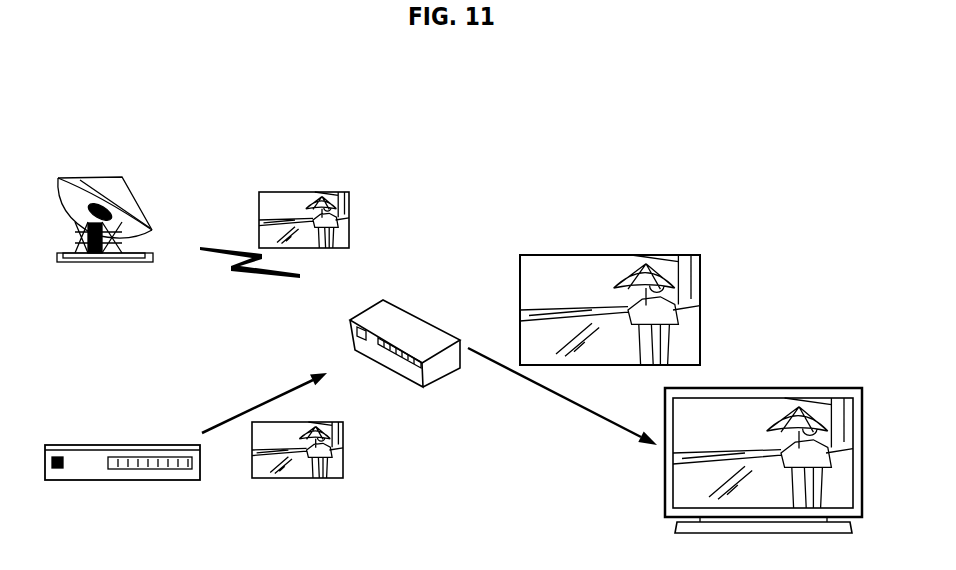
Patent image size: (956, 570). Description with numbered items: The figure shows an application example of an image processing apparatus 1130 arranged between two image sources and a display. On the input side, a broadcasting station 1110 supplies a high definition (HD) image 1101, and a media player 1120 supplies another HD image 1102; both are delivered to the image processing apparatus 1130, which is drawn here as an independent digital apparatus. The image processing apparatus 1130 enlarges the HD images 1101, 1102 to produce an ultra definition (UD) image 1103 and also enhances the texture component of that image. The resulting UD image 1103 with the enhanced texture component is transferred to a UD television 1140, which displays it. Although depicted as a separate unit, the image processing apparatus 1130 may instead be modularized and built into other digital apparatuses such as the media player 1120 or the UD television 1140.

The broadcasting station 1110 is at (80, 173).
The high definition (HD) image 1101 is at (315, 191).
The HD image 1102 is at (343, 453).
The ultra definition (UD) image 1103 is at (630, 255).
The image processing apparatus 1130 is at (410, 306).
The media player 1120 is at (82, 443).
The UD television 1140 is at (760, 386).